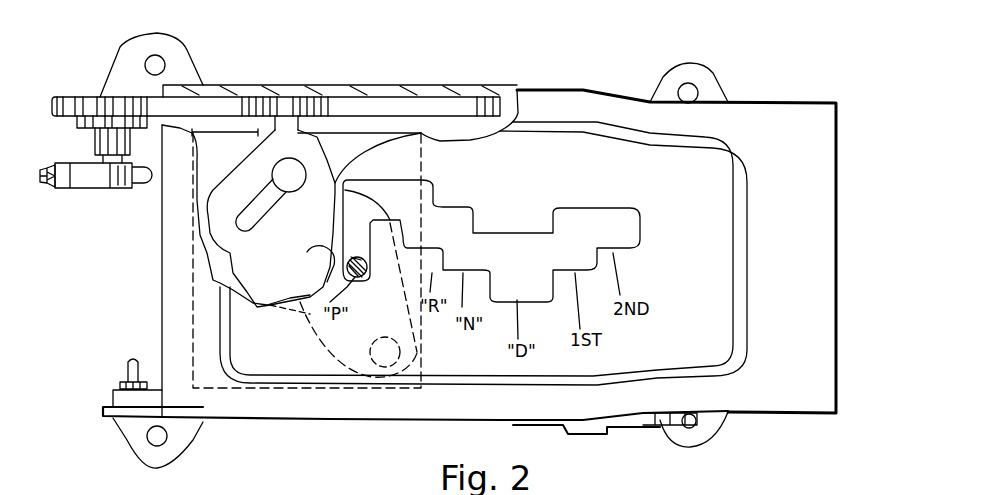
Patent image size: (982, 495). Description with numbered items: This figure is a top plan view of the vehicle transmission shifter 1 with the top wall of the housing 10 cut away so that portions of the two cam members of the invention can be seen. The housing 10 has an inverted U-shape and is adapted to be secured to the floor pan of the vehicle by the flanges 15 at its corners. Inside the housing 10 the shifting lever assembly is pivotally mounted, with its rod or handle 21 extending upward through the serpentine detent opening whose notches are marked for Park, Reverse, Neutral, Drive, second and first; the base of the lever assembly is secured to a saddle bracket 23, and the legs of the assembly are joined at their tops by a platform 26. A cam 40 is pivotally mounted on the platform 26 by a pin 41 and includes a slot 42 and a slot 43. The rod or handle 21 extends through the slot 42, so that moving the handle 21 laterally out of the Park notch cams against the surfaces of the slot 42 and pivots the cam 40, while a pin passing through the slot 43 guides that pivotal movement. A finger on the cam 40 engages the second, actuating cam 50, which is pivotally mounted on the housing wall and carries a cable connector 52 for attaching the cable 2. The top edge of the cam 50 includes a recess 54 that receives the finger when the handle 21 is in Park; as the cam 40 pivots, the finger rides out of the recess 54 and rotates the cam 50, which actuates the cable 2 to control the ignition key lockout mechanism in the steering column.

The shifter 1 is at (557, 82).
The cable 2 is at (38, 188).
The housing 10 is at (805, 118).
The flanges 15 is at (180, 68).
The rod or handle 21 is at (368, 272).
The saddle bracket 23 is at (228, 147).
The platform 26 is at (400, 352).
The cam 40 is at (210, 253).
The pin 41 is at (397, 373).
The slot 42 is at (320, 267).
The slot 43 is at (269, 203).
The actuating cam 50 is at (388, 108).
The cable connector 52 is at (95, 144).
The recess 54 is at (308, 110).